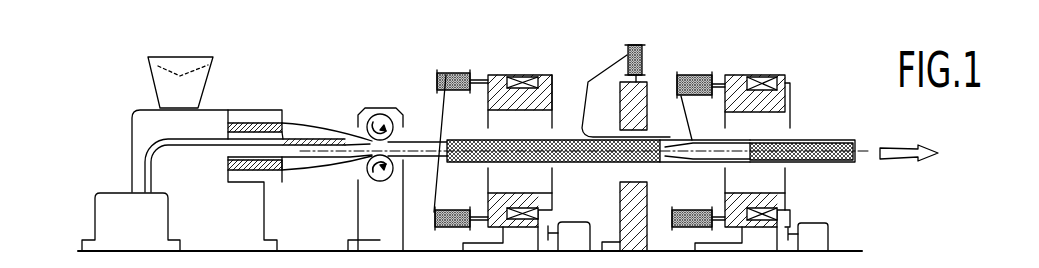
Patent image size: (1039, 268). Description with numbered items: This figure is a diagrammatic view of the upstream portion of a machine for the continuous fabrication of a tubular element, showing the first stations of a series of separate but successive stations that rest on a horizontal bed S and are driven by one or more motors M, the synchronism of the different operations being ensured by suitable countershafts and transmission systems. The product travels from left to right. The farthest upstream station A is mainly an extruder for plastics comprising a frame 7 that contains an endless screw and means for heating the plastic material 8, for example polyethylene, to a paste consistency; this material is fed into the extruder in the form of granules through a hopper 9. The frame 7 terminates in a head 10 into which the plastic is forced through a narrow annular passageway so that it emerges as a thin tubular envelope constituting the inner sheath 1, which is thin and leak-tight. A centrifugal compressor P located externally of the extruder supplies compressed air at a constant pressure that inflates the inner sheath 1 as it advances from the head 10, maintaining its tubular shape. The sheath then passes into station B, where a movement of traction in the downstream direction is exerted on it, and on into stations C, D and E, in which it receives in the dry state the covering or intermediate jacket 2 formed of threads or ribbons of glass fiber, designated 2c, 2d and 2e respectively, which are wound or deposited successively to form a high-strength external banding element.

The inner sheath 1 is at (324, 141).
The intermediate jacket 2 is at (437, 162).
The glass fiber threads or ribbons 2c is at (437, 115).
The glass fiber threads or ribbons 2d is at (598, 190).
The glass fiber threads or ribbons 2e is at (693, 163).
The frame 7 is at (149, 109).
The plastic material 8 is at (193, 74).
The hopper 9 is at (206, 95).
The head 10 is at (260, 119).
The first station A is at (295, 104).
The station B is at (363, 93).
The station C is at (526, 70).
The station D is at (656, 82).
The station E is at (775, 70).
The centrifugal compressor P is at (133, 232).
The motor M is at (693, 236).
The bed S is at (843, 251).